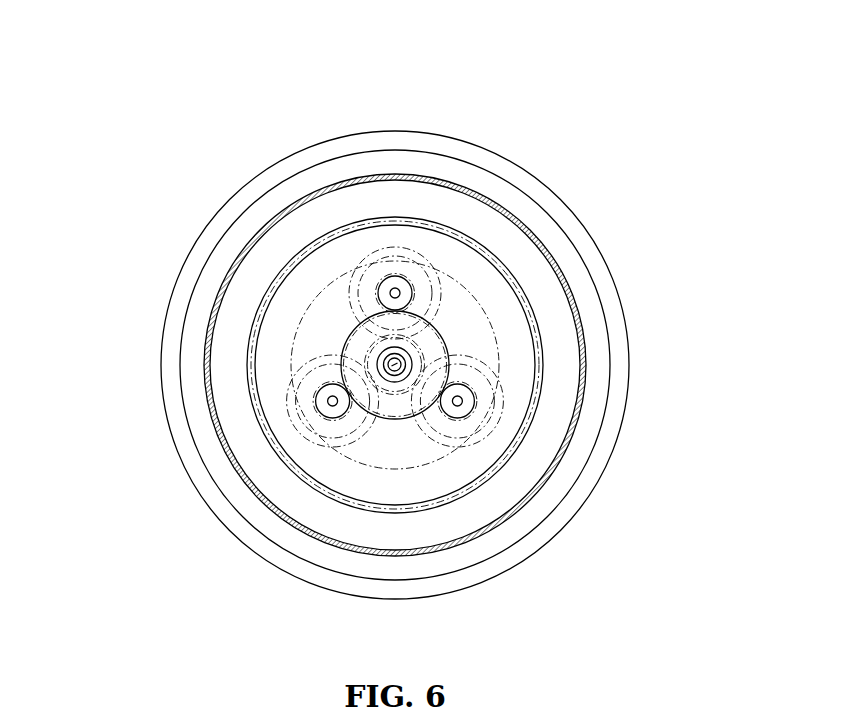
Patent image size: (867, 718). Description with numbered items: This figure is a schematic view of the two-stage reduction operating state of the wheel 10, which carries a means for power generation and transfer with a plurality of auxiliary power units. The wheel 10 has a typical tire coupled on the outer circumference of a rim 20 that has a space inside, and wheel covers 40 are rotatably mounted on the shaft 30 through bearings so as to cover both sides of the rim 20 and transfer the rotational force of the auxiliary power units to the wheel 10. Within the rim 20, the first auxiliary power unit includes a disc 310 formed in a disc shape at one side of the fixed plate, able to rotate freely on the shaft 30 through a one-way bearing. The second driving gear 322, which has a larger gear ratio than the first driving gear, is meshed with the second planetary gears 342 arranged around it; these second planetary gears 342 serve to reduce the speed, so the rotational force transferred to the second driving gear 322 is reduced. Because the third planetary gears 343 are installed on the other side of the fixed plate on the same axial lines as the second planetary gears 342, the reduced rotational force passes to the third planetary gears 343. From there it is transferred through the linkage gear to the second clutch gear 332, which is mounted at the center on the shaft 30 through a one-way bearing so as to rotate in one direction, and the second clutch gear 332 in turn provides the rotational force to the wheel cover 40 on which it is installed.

The wheel 10 is at (453, 152).
The rim 20 is at (388, 173).
The shaft 30 is at (418, 357).
The wheel cover 40 is at (290, 228).
The disc 310 is at (473, 453).
The second driving gear 322 is at (365, 367).
The second clutch gear 332 is at (400, 353).
The second planetary gear 342 is at (423, 262).
The third planetary gear 343 is at (380, 283).